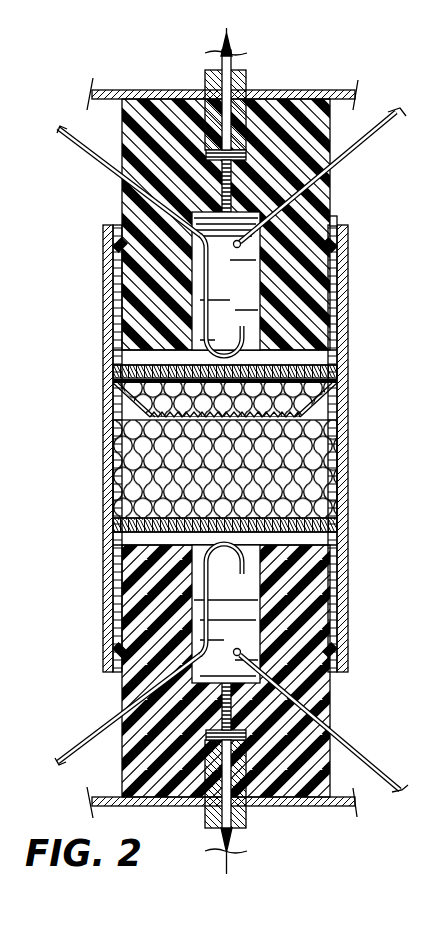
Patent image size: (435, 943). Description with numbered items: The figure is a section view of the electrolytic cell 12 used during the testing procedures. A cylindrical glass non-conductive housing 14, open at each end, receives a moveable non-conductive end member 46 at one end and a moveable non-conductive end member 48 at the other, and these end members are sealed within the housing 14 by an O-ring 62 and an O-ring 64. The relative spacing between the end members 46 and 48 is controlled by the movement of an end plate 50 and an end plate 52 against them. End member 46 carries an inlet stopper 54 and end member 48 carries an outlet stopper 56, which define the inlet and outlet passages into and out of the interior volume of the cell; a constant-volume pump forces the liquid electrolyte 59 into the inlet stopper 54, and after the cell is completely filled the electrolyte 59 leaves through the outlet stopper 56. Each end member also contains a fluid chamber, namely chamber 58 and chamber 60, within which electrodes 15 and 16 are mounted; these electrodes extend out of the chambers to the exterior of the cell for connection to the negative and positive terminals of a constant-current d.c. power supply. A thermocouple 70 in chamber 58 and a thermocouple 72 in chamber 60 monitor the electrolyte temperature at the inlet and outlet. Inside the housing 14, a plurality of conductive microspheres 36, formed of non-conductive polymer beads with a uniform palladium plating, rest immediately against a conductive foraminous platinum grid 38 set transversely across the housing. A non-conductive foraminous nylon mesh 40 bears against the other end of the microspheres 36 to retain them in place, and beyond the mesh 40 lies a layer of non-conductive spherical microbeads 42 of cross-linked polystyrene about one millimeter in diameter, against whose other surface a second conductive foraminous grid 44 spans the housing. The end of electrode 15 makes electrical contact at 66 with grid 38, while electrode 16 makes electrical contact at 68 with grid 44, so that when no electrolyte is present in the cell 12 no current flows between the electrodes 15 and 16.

The electrolytic cell 12 is at (96, 466).
The housing 14 is at (103, 365).
The electrode 15 is at (95, 733).
The electrode 16 is at (88, 162).
The conductive microspheres 36 is at (133, 493).
The conductive foraminous grid 38 is at (325, 489).
The non-conductive foraminous nylon mesh 40 is at (335, 390).
The non-conductive spherical microbeads 42 is at (113, 392).
The conductive foraminous grid 44 is at (300, 335).
The end member 46 is at (132, 612).
The end member 48 is at (325, 197).
The end plate 50 is at (174, 806).
The end plate 52 is at (302, 90).
The inlet stopper 54 is at (250, 822).
The outlet stopper 56 is at (248, 76).
The fluid chamber 58 is at (300, 588).
The liquid electrolyte 59 is at (228, 308).
The fluid chamber 60 is at (248, 278).
The O-ring 62 is at (118, 645).
The O-ring 64 is at (333, 219).
The electrical contact 66 is at (208, 582).
The electrical contact 68 is at (120, 320).
The thermocouple 70 is at (343, 736).
The thermocouple 72 is at (362, 152).